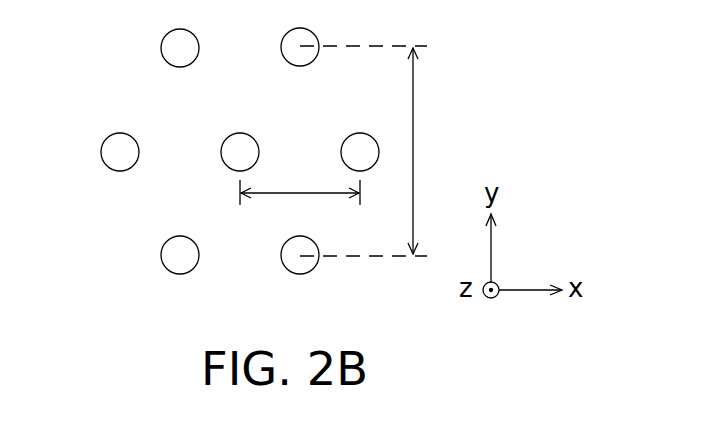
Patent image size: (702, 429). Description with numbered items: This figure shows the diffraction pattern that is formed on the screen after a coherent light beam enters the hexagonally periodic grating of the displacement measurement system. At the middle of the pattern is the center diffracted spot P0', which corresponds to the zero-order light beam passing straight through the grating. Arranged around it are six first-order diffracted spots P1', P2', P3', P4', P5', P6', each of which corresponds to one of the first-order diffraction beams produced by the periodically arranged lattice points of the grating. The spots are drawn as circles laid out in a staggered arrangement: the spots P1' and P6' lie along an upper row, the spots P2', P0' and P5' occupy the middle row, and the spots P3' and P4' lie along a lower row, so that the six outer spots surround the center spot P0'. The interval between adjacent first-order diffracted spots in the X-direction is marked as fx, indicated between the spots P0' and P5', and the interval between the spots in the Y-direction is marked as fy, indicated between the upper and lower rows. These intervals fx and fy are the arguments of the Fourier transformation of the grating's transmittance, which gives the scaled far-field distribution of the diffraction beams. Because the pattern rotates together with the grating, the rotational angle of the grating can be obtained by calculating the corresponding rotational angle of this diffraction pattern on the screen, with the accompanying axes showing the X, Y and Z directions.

The center diffracted spot P0' is at (223, 130).
The first-order diffracted spot P1' is at (148, 44).
The first-order diffracted spot P2' is at (103, 130).
The first-order diffracted spot P3' is at (148, 252).
The first-order diffracted spot P4' is at (268, 252).
The first-order diffracted spot P5' is at (343, 130).
The first-order diffracted spot P6' is at (268, 44).
The interval between first-order diffracted spots in the X-direction fx is at (300, 204).
The interval between first-order diffracted spots in the Y-direction fy is at (369, 151).